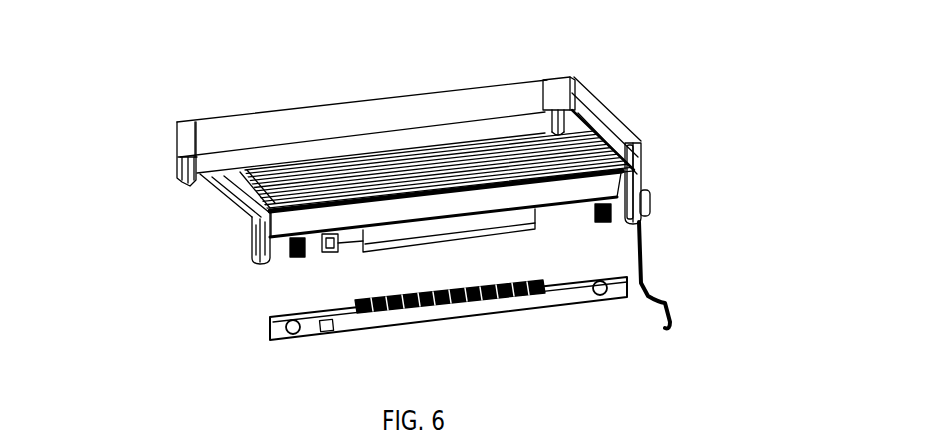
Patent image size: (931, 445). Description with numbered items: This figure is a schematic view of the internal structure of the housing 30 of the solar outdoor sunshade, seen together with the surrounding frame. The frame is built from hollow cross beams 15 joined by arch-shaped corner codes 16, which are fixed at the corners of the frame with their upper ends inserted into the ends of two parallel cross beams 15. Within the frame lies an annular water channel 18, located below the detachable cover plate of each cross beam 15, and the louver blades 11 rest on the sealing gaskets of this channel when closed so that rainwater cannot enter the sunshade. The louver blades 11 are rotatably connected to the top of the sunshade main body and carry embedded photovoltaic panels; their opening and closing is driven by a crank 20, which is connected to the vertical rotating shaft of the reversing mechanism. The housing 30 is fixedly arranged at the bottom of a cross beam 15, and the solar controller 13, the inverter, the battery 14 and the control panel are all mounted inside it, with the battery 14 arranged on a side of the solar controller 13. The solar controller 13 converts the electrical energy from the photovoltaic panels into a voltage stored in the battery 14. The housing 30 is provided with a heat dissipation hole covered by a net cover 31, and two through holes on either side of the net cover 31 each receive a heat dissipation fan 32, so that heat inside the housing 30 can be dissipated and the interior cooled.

The louver blade 11 is at (423, 146).
The solar controller 13 is at (331, 265).
The battery 14 is at (449, 247).
The cross beam 15 is at (620, 104).
The corner code 16 is at (418, 141).
The annular water channel 18 is at (658, 157).
The crank 20 is at (680, 275).
The housing 30 is at (455, 325).
The net cover 31 is at (450, 328).
The heat dissipation fan 32 is at (423, 250).